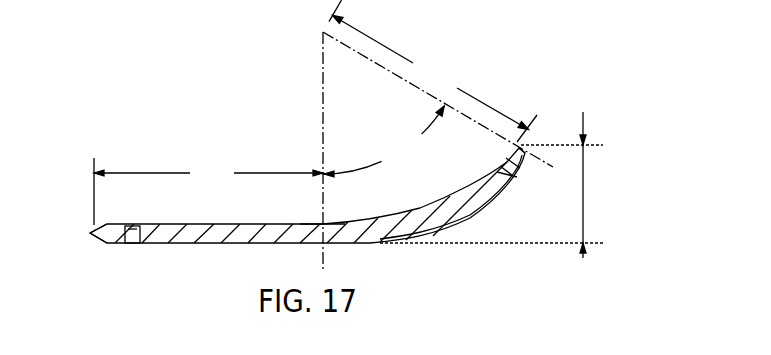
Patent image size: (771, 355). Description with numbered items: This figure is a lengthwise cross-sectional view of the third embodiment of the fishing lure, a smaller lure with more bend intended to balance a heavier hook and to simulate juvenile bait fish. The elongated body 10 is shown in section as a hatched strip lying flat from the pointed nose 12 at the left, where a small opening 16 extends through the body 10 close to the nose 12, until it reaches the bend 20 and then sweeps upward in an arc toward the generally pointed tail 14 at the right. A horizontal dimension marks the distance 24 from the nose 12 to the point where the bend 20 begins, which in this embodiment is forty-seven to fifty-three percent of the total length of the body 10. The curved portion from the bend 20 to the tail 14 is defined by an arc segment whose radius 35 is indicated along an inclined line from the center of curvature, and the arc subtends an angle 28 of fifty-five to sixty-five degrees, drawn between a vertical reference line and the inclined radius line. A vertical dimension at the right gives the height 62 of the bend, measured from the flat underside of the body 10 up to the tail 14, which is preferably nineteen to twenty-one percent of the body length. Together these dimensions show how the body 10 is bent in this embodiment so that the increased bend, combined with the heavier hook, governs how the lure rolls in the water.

The body 10 is at (170, 292).
The nose 12 is at (90, 233).
The tail 14 is at (537, 146).
The opening 16 is at (135, 225).
The bend 20 is at (322, 223).
The distance 24 is at (208, 191).
The angle 28 is at (383, 141).
The radius 35 is at (429, 65).
The height of the bend 62 is at (583, 185).